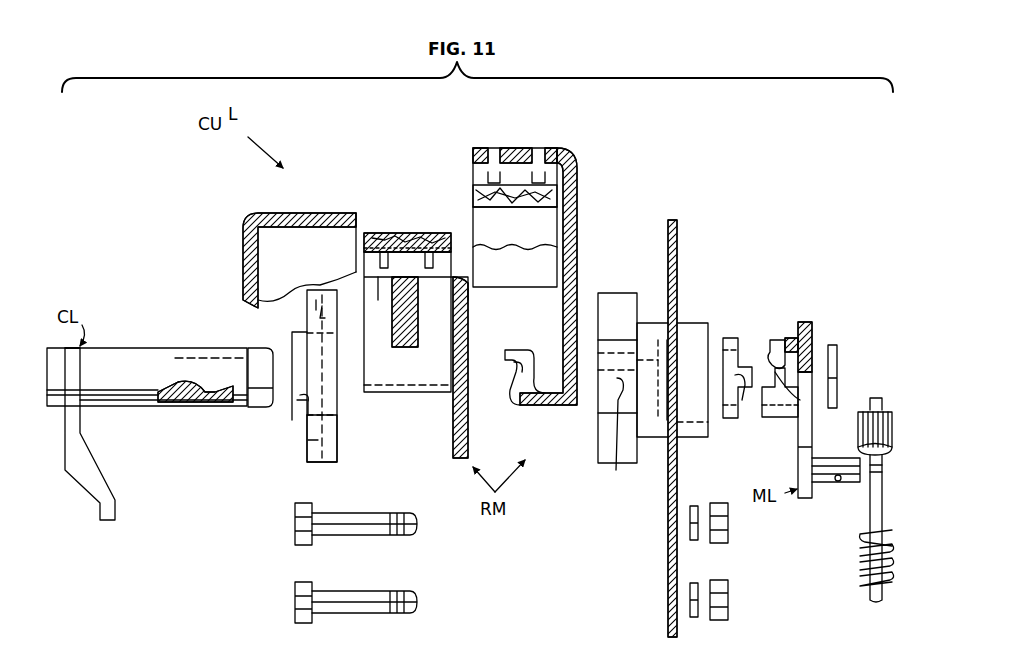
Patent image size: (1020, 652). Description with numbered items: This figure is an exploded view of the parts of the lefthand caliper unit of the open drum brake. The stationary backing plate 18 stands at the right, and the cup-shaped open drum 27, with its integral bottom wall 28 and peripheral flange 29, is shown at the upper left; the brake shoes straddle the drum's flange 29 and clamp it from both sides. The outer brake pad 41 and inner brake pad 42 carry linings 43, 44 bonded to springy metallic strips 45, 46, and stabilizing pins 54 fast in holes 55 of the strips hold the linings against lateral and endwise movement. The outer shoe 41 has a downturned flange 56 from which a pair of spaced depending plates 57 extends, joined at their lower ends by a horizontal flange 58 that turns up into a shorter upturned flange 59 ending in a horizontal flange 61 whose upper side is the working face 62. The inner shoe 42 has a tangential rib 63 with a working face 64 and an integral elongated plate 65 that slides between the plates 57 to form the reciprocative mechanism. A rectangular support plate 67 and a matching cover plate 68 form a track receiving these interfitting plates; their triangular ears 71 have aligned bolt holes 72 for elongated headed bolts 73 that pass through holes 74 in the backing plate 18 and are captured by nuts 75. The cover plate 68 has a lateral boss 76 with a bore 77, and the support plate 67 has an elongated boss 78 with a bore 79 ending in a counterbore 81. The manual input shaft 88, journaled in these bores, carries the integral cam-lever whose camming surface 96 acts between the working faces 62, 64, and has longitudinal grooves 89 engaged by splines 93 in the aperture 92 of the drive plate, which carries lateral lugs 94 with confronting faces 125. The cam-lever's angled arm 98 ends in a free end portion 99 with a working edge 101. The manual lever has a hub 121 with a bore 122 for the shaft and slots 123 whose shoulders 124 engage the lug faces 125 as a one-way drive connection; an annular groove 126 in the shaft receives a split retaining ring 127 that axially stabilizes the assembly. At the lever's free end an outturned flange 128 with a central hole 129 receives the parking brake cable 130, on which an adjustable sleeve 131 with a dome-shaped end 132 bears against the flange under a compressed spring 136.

The backing plate 18 is at (680, 232).
The open drum 27 is at (247, 221).
The bottom wall 28 is at (243, 260).
The peripheral flange 29 is at (350, 188).
The outer brake pad (shoe) 41 is at (515, 260).
The inner brake pad (shoe) 42 is at (416, 322).
The lining 43 is at (565, 195).
The lining 44 is at (420, 233).
The metallic strip 45 is at (515, 180).
The metallic strip 46 is at (400, 233).
The stabilizing pins 54 is at (364, 240).
The holes 55 is at (392, 290).
The downturned flange 56 is at (575, 185).
The depending members (plates) 57 is at (578, 218).
The horizontal flange 58 is at (548, 412).
The upturned flange 59 is at (512, 380).
The horizontal flange 61 is at (508, 370).
The working surface (face) 62 is at (524, 350).
The tangentially-oriented flange (rib) 63 is at (408, 322).
The working surface (face) 64 is at (362, 352).
The elongated member (plate) 65 is at (468, 390).
The support (base) member (plate) 67 is at (597, 455).
The cover member (plate) 68 is at (340, 424).
The projections (ears) 71 is at (615, 280).
The bolt holes 72 is at (316, 300).
The headed bolts 73 is at (295, 598).
The holes 74 is at (674, 375).
The capturing nuts 75 is at (728, 598).
The lateral boss 76 is at (292, 332).
The bore 77 is at (660, 440).
The lateral boss 78 is at (655, 323).
The bore 79 is at (305, 435).
The counterbore 81 is at (710, 320).
The manual input shaft 88 is at (165, 317).
The longitudinal grooves 89 is at (201, 404).
The circular aperture 92 is at (745, 405).
The splines 93 is at (740, 362).
The lugs 94 is at (760, 340).
The camming surface 96 is at (72, 378).
The elongated arm 98 is at (101, 460).
The terminal free end portion 99 is at (118, 502).
The working edge 101 is at (107, 522).
The hub 121 is at (792, 430).
The bore 122 is at (800, 322).
The slots 123 is at (776, 345).
The working ends (shoulders) 124 is at (810, 418).
The confronting sides (faces) 125 is at (724, 390).
The annular groove 126 is at (250, 408).
The split metallic retaining ring 127 is at (840, 348).
The outturned flange 128 is at (838, 485).
The central hole 129 is at (836, 482).
The flexible link (cable) 130 is at (878, 598).
The axially-adjustable collar (sleeve) 131 is at (882, 412).
The dome-shaped end 132 is at (884, 458).
The spring 136 is at (865, 568).